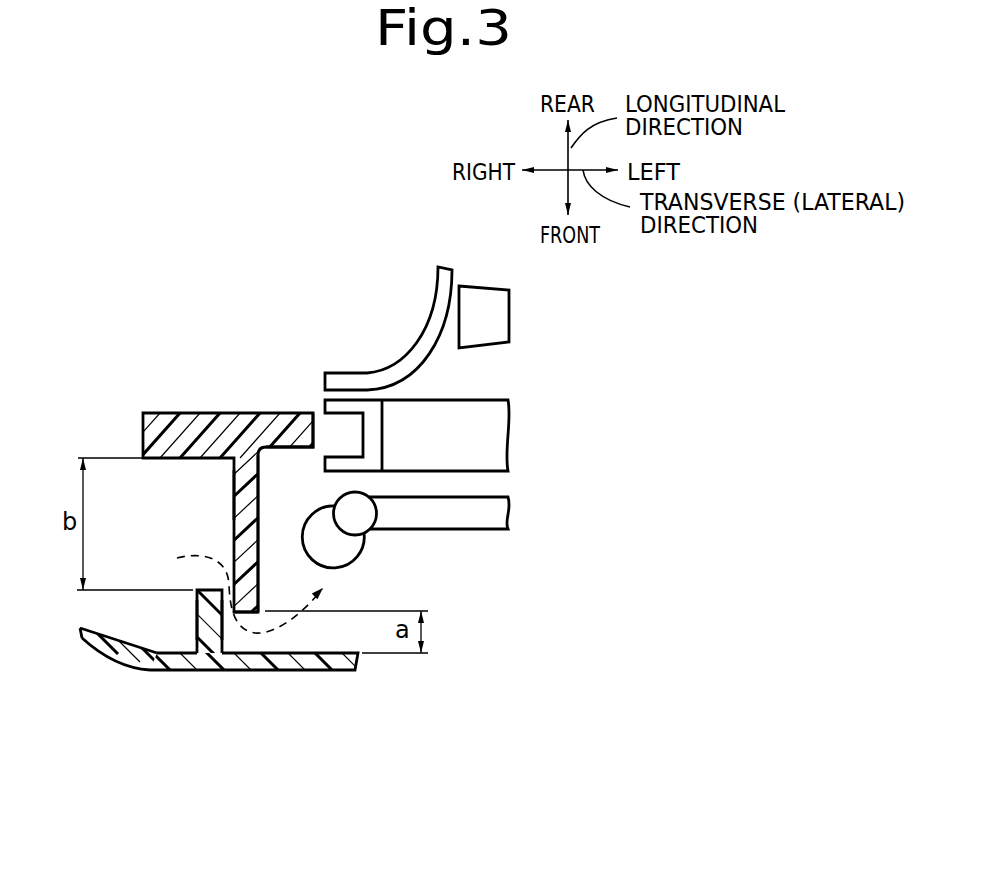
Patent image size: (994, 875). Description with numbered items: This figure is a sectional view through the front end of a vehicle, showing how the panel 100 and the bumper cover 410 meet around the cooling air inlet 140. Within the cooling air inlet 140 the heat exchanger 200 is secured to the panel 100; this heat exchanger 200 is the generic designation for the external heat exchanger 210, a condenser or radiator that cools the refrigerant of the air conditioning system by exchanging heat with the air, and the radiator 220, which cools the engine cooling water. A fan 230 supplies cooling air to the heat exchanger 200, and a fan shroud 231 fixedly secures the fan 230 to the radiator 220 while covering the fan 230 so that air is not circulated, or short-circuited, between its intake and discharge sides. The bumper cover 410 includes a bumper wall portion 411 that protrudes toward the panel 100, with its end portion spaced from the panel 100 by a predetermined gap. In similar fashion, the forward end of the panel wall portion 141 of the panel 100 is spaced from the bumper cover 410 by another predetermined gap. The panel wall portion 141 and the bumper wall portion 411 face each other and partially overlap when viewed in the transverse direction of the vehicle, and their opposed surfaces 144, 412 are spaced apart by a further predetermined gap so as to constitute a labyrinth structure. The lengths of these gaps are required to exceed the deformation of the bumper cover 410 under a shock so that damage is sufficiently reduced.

The panel 100 is at (272, 463).
The cooling air inlet 140 is at (340, 437).
The panel wall portion 141 is at (255, 507).
The opposed surface of panel wall portion 144 is at (236, 584).
The heat exchanger 200 is at (491, 484).
The external heat exchanger 210 is at (483, 517).
The radiator 220 is at (478, 439).
The fan 230 is at (490, 322).
The fan shroud 231 is at (403, 357).
The bumper cover 410 is at (335, 672).
The bumper wall portion 411 is at (197, 602).
The opposed surface of bumper wall portion 412 is at (218, 590).